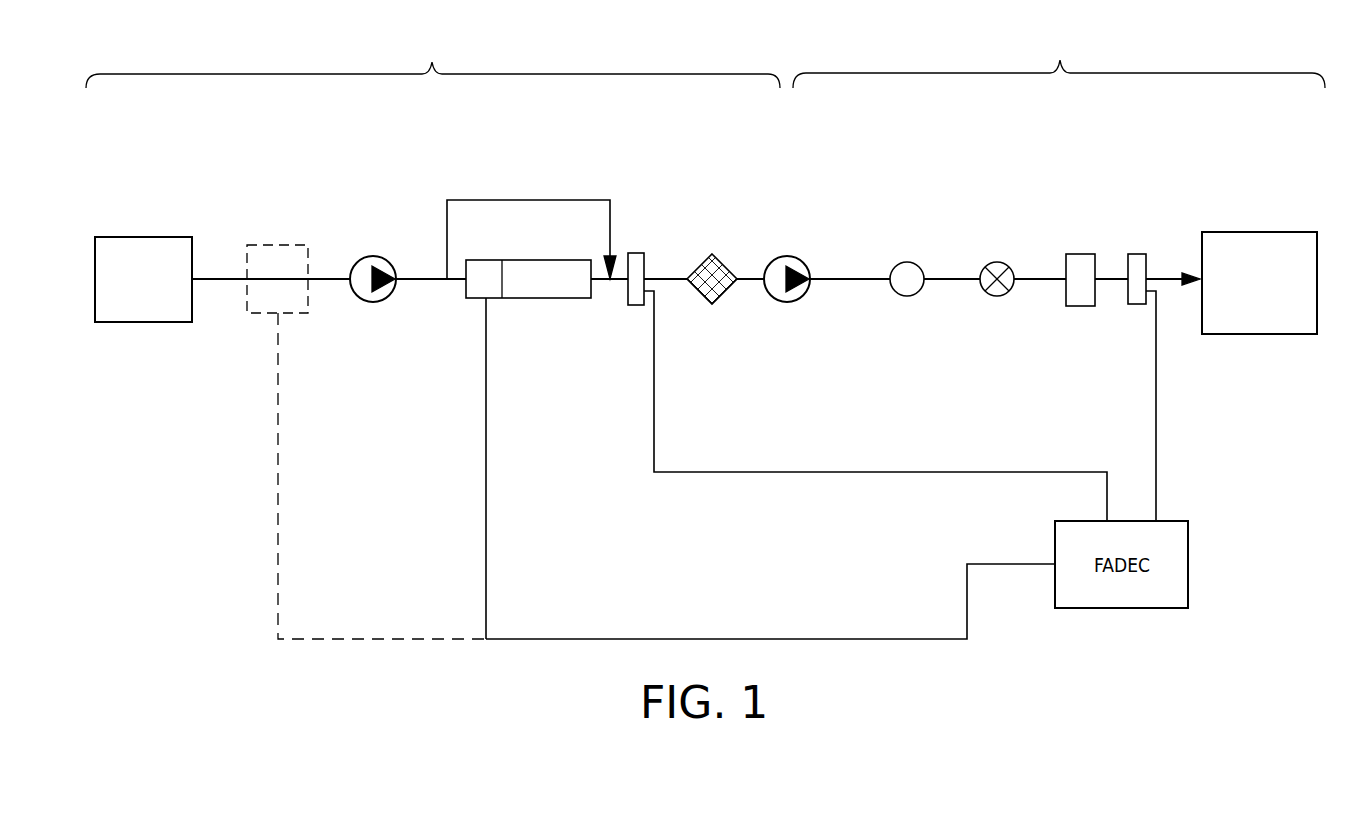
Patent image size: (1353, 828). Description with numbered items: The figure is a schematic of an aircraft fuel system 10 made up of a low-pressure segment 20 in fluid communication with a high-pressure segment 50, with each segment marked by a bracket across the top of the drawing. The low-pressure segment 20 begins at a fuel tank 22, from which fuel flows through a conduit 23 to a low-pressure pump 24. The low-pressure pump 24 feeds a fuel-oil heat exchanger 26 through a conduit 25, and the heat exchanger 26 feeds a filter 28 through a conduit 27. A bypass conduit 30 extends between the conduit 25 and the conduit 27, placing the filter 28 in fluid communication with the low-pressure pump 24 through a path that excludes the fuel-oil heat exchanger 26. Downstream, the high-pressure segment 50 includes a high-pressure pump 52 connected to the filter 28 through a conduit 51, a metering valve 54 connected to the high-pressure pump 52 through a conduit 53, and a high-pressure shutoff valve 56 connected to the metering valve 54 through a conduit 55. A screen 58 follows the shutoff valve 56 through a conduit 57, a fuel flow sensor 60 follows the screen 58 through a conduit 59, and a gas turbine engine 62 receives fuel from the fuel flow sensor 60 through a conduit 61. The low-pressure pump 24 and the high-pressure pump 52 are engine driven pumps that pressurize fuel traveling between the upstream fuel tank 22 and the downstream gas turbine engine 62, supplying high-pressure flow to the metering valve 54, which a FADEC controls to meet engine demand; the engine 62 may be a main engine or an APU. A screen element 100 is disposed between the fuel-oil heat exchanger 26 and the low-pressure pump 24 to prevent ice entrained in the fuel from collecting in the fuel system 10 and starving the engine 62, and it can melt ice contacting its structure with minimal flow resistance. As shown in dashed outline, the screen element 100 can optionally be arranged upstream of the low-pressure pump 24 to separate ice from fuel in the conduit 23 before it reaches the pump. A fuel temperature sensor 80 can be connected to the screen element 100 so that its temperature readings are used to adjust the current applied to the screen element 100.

The fuel system 10 is at (600, 515).
The low-pressure segment 20 is at (433, 59).
The fuel tank 22 is at (131, 322).
The conduit 23 is at (223, 279).
The low-pressure pump 24 is at (366, 302).
The conduit 25 is at (417, 279).
The fuel-oil heat exchanger 26 is at (548, 298).
The conduit 27 is at (667, 279).
The filter 28 is at (722, 296).
The bypass conduit 30 is at (530, 200).
The high-pressure segment 50 is at (1059, 59).
The conduit 51 is at (745, 279).
The high-pressure pump 52 is at (795, 302).
The conduit 53 is at (845, 279).
The metering valve 54 is at (903, 296).
The conduit 55 is at (950, 279).
The high-pressure shutoff valve 56 is at (994, 296).
The conduit 57 is at (1028, 279).
The screen 58 is at (1082, 306).
The conduit 59 is at (1110, 279).
The fuel flow sensor 60 is at (1137, 304).
The conduit 61 is at (1165, 279).
The gas turbine engine 62 is at (1238, 334).
The fuel temperature sensor 80 is at (636, 305).
The screen element 100 is at (262, 302).